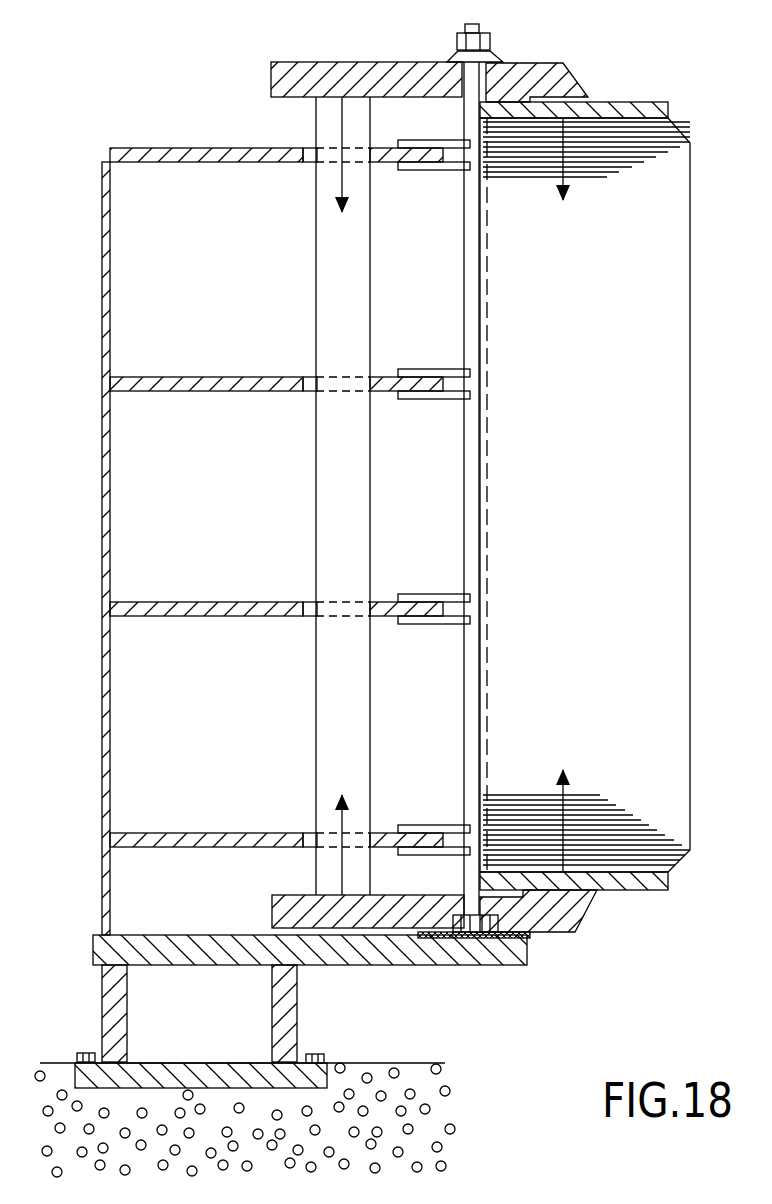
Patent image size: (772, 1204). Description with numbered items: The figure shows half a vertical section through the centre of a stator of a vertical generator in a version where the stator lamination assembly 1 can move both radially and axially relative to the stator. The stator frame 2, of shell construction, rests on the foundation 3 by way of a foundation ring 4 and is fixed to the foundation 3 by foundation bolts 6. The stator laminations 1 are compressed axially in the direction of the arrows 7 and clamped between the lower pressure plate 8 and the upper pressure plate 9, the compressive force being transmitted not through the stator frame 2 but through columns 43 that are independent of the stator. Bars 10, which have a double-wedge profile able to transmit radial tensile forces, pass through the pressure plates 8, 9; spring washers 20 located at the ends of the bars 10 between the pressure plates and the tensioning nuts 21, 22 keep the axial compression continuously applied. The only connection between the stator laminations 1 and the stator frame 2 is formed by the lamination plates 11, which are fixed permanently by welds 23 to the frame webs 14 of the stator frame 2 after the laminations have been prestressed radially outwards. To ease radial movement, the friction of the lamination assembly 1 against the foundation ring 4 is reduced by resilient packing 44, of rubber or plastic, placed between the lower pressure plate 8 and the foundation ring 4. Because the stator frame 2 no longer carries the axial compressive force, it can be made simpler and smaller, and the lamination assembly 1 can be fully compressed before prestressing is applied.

The stator lamination assembly 1 is at (655, 505).
The stator frame 2 is at (105, 496).
The foundation 3 is at (408, 1122).
The foundation ring 4 is at (115, 1000).
The foundation bolts 6 is at (86, 1053).
The arrows 7 is at (340, 178).
The lower pressure plate 8 is at (553, 912).
The upper pressure plate 9 is at (358, 80).
The bars 10 is at (473, 268).
The lamination plates 11 is at (438, 396).
The frame web 14 is at (261, 382).
The spring washers 20 is at (499, 53).
The tensioning nut 21 is at (468, 933).
The tensioning nut 22 is at (461, 41).
The welds 23 is at (397, 145).
The columns 43 is at (340, 277).
The resilient packing 44 is at (507, 939).